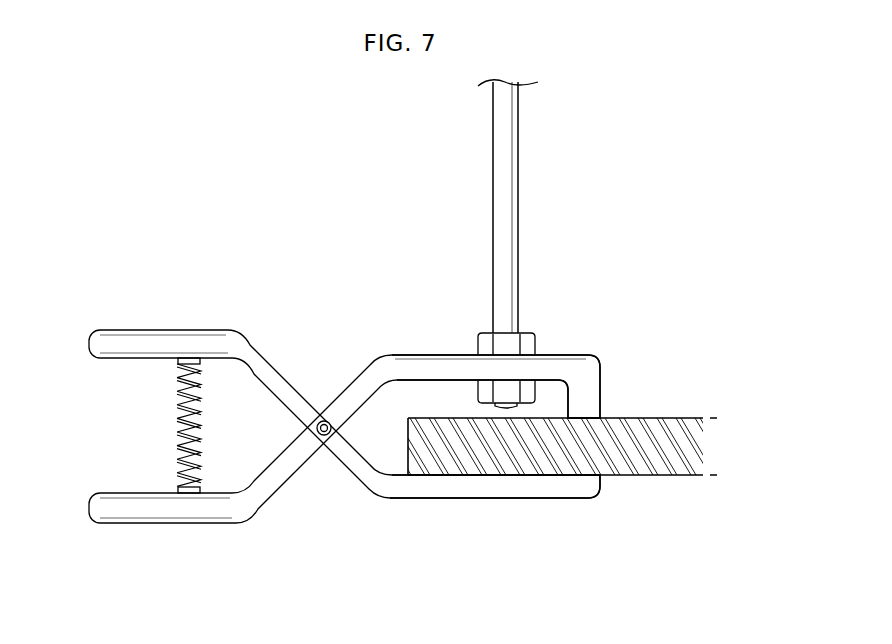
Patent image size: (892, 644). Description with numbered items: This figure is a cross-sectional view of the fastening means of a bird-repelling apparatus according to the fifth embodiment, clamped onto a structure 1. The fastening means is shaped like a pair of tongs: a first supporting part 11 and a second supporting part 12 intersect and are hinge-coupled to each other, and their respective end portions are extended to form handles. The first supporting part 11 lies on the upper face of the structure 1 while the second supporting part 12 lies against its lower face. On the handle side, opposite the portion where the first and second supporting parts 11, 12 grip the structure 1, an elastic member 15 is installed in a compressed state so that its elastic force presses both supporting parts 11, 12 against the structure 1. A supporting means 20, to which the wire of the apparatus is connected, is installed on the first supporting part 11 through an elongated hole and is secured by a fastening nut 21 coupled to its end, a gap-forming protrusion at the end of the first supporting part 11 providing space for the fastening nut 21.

The structure 1 is at (645, 430).
The first supporting part 11 is at (426, 362).
The second supporting part 12 is at (440, 491).
The elastic member 15 is at (178, 430).
The supporting means 20 is at (509, 153).
The fastening nut 21 is at (527, 340).